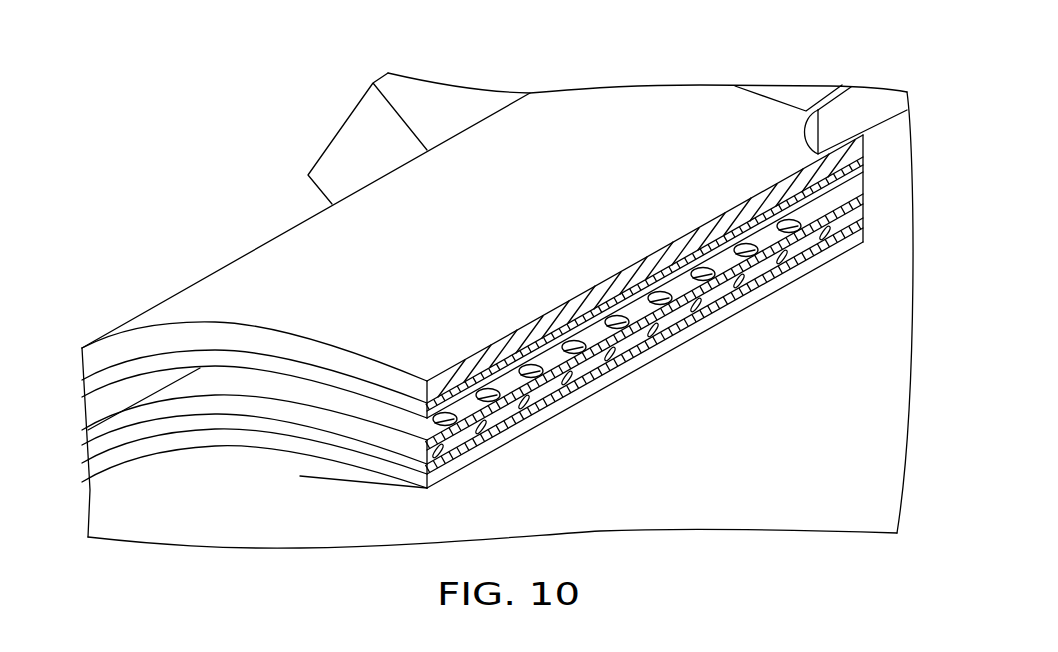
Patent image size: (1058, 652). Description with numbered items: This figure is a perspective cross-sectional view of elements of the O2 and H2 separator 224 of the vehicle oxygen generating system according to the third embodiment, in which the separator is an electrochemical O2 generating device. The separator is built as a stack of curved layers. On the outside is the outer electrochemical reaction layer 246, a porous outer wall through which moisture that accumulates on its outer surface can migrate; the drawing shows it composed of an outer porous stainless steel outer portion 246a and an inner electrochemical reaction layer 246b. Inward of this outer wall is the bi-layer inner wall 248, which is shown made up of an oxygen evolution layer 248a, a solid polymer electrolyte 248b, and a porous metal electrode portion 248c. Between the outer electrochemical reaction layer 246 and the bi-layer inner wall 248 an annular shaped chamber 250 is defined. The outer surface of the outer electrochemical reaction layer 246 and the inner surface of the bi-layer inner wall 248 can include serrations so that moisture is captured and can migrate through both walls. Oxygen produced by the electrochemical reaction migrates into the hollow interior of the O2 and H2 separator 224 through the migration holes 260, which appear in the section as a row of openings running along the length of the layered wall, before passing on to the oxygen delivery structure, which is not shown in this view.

The O2 and H2 separator 224 is at (719, 46).
The outer electrochemical reaction layer 246 is at (232, 296).
The outer porous stainless steel outer portion 246a is at (347, 365).
The inner electrochemical reaction layer 246b is at (220, 361).
The bi-layer inner wall 248 is at (162, 447).
The oxygen evolution layer 248a is at (282, 405).
The solid polymer electrolyte 248b is at (330, 427).
The porous metal electrode portion 248c is at (377, 457).
The annular shaped chamber 250 is at (110, 402).
The migration holes 260 is at (575, 352).